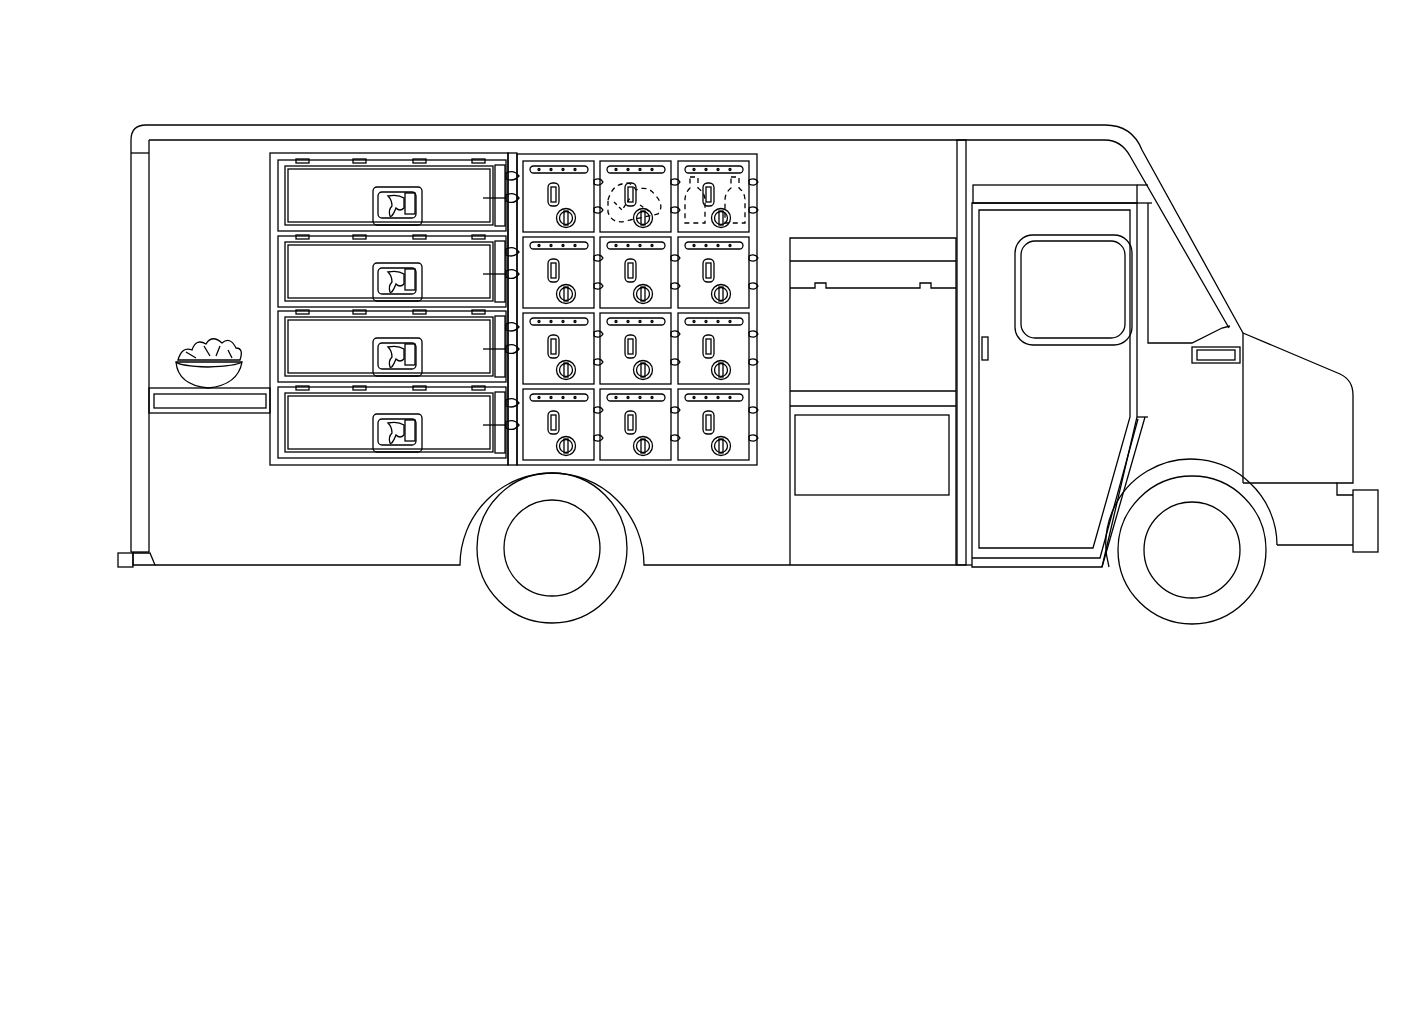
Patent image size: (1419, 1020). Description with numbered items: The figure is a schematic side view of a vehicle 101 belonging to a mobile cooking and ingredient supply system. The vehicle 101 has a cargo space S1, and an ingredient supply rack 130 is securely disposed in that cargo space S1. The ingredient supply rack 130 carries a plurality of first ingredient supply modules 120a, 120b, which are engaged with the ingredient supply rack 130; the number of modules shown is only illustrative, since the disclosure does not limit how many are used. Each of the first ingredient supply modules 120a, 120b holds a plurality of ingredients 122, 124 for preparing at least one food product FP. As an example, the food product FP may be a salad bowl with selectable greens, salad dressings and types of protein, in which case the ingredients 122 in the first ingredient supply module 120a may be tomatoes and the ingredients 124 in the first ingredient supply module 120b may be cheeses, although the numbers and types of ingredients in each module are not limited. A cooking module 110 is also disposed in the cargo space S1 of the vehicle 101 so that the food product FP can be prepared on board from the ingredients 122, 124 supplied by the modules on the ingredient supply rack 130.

The vehicle 101 is at (1408, 703).
The cooking module 110 is at (900, 238).
The first ingredient supply module 120a is at (722, 165).
The first ingredient supply module 120b is at (647, 165).
The ingredients 122 is at (695, 165).
The ingredients 124 is at (612, 165).
The ingredient supply rack 130 is at (450, 153).
The cargo space S1 is at (498, 140).
The food product FP is at (200, 346).